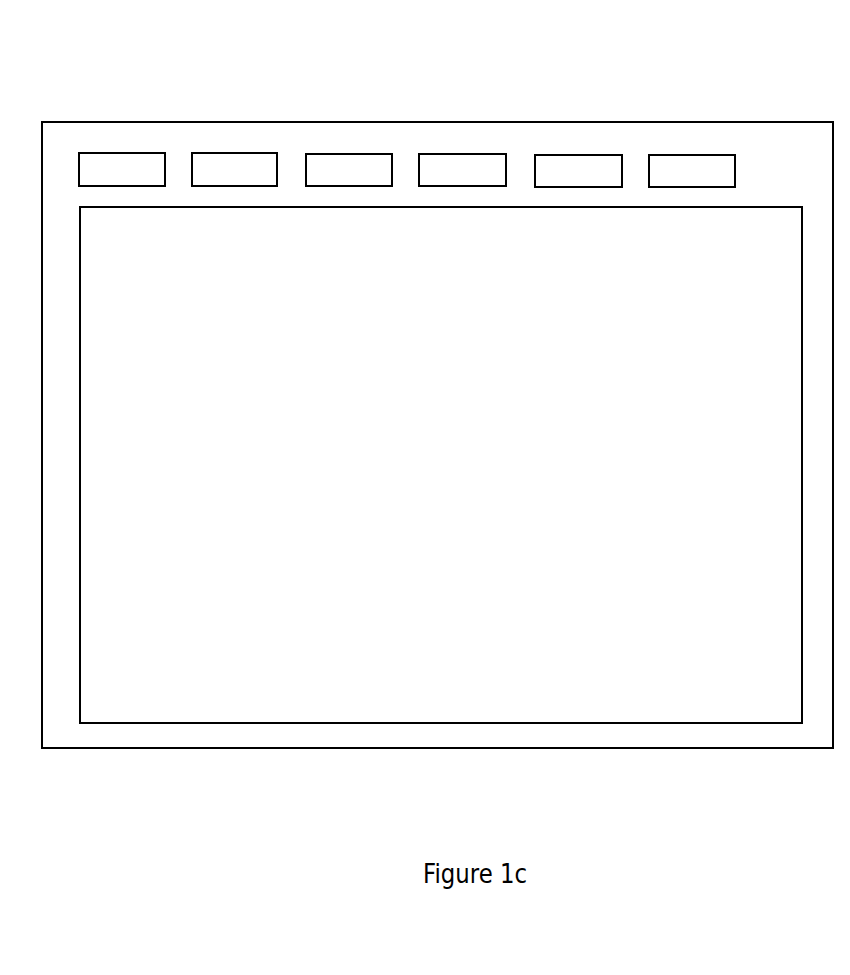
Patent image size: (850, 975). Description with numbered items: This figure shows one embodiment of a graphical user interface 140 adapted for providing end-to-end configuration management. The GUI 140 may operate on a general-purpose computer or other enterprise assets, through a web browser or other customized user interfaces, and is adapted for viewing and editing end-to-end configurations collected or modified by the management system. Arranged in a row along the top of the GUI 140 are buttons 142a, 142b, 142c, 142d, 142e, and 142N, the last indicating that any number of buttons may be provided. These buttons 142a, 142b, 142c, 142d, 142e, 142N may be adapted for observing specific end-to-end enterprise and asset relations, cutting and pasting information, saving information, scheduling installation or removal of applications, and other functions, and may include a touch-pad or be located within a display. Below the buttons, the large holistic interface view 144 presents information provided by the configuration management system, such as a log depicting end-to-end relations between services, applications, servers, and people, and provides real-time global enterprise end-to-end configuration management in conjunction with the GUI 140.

The graphical user interface 140 is at (766, 96).
The button 142a is at (121, 152).
The button 142b is at (235, 152).
The button 142c is at (349, 153).
The button 142d is at (462, 153).
The button 142e is at (579, 154).
The button 142N is at (693, 154).
The holistic interface view 144 is at (443, 436).